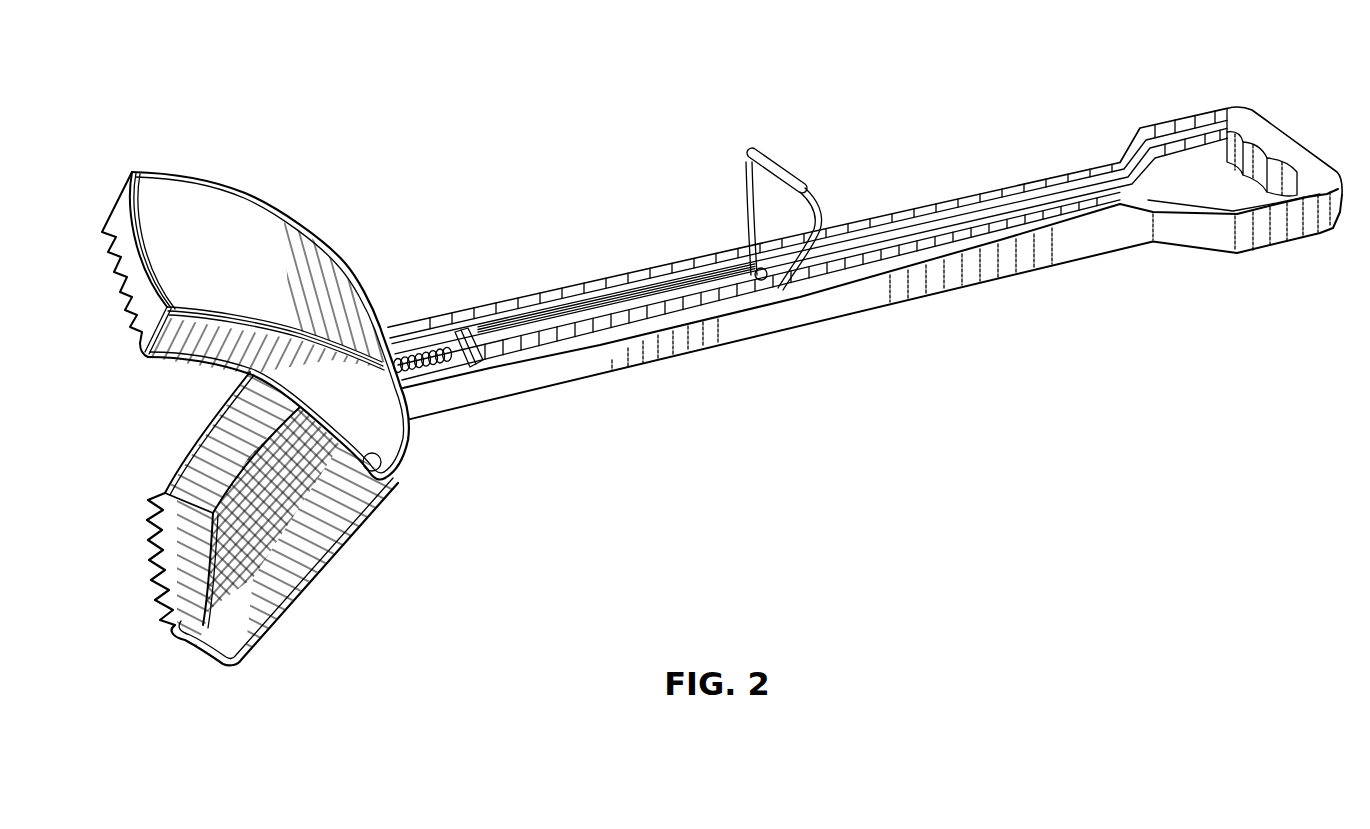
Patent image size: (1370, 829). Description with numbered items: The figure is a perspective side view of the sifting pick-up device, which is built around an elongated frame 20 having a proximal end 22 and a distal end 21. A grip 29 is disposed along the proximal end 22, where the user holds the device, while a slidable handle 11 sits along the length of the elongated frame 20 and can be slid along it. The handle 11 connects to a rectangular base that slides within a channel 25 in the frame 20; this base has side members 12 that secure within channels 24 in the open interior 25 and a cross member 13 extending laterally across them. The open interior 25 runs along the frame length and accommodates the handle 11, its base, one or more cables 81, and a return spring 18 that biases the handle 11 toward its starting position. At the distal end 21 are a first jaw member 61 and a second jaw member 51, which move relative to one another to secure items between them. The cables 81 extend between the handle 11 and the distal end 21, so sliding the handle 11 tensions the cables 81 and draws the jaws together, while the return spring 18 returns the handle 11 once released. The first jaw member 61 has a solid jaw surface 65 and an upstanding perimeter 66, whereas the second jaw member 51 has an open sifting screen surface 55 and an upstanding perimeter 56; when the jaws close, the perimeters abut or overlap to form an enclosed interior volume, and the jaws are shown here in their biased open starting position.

The elongated frame 20 is at (763, 366).
The distal end 21 is at (391, 328).
The proximal end 22 is at (1097, 162).
The channels 24 is at (883, 237).
The channel / open interior 25 is at (580, 333).
The grip 29 is at (1247, 127).
The slidable handle 11 is at (780, 172).
The side members 12 is at (672, 288).
The cross member 13 is at (467, 333).
The return spring 18 is at (420, 353).
The cables 81 is at (713, 272).
The first jaw member 61 is at (243, 203).
The solid jaw surface 65 is at (297, 270).
The upstanding perimeter 66 is at (375, 412).
The second jaw member 51 is at (233, 643).
The sifting screen surface 55 is at (253, 553).
The upstanding perimeter 56 is at (205, 440).